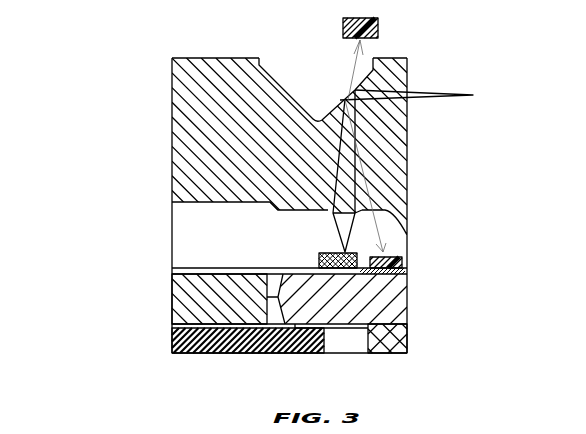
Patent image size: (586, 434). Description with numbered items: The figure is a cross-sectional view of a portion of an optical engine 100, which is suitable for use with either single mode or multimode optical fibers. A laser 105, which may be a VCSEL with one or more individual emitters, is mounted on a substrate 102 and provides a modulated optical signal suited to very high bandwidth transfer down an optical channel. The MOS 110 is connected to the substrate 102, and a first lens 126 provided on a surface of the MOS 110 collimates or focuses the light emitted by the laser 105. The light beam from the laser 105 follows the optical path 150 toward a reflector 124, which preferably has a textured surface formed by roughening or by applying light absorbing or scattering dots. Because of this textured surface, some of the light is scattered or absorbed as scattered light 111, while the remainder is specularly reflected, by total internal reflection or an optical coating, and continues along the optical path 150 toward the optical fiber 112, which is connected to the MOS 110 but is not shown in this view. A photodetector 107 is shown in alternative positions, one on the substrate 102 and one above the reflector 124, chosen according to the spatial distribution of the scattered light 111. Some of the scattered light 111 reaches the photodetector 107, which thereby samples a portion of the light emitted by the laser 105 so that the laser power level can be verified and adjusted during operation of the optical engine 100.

The optical engine 100 is at (470, 18).
The substrate 102 is at (172, 343).
The laser 105 is at (358, 258).
The photodetector 107 is at (342, 25).
The MOS 110 is at (172, 157).
The scattered light 111 is at (348, 100).
The optical fiber 112 is at (473, 95).
The reflector 124 is at (353, 91).
The first lens 126 is at (333, 215).
The optical path 150 is at (314, 120).